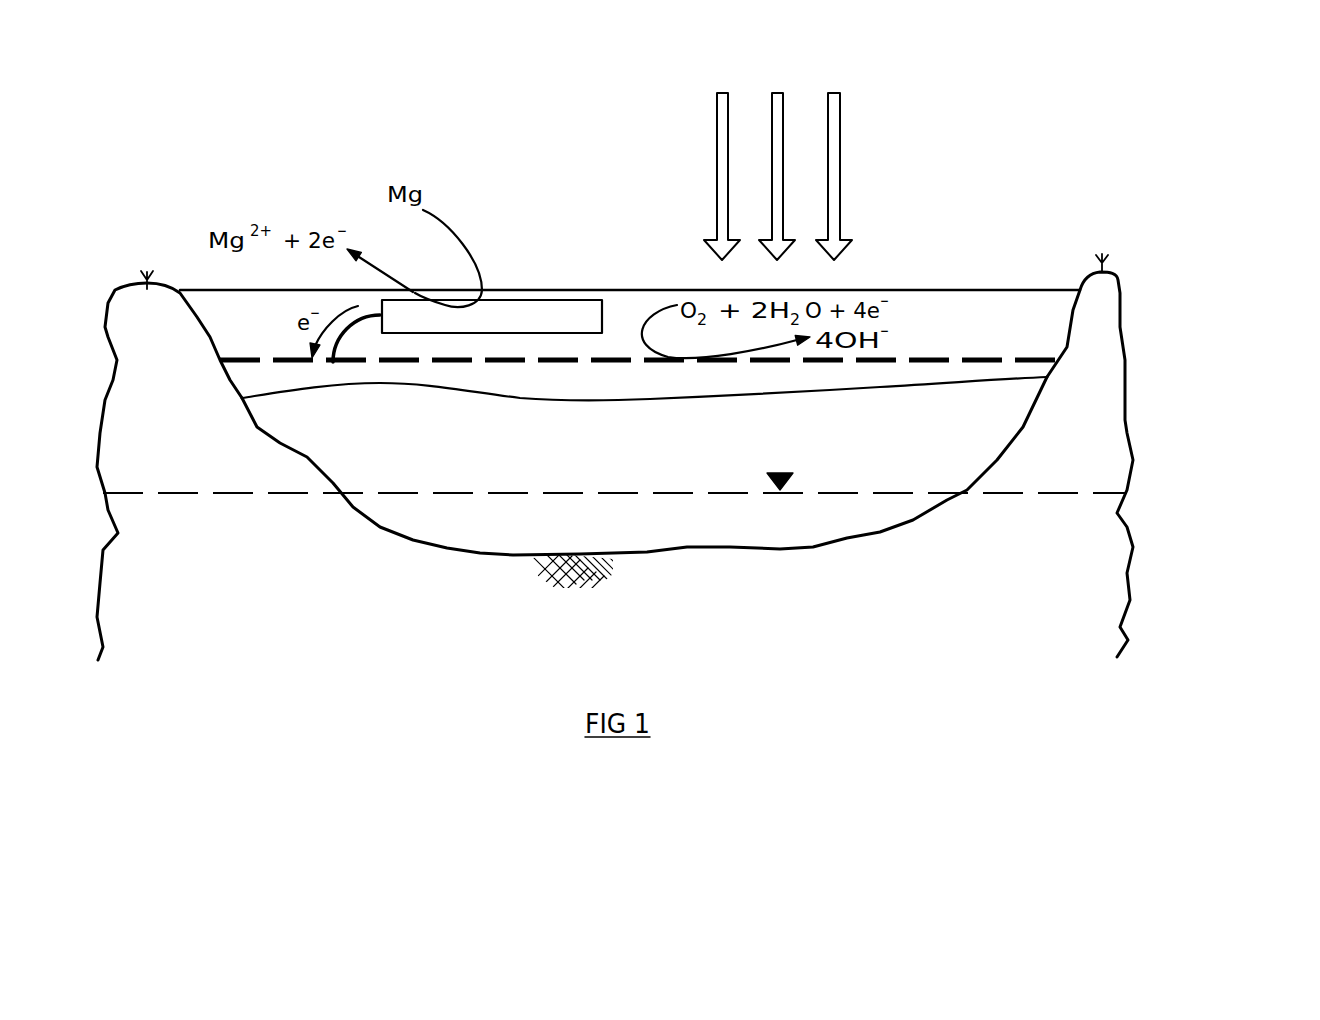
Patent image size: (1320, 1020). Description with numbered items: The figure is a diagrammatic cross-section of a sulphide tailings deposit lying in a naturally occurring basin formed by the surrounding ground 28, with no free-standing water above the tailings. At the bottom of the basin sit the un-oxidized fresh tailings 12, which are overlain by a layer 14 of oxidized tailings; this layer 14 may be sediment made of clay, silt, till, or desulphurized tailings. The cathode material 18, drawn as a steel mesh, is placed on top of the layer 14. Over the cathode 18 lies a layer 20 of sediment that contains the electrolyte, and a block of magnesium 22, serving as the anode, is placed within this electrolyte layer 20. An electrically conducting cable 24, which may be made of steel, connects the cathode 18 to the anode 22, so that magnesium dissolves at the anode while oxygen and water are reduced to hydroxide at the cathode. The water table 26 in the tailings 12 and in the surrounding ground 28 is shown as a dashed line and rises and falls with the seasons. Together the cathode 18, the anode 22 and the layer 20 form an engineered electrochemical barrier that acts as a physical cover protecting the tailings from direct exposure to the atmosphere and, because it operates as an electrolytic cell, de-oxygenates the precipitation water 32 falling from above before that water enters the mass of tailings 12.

The fresh tailings 12 is at (504, 467).
The layer of oxidized tailings 14 is at (519, 389).
The cathode material 18 is at (270, 361).
The layer of sediment 20 is at (970, 320).
The block of magnesium 22 is at (552, 317).
The electrically conducting cable 24 is at (343, 330).
The water table 26 is at (615, 467).
The surrounding ground 28 is at (243, 583).
The precipitation water 32 is at (805, 153).